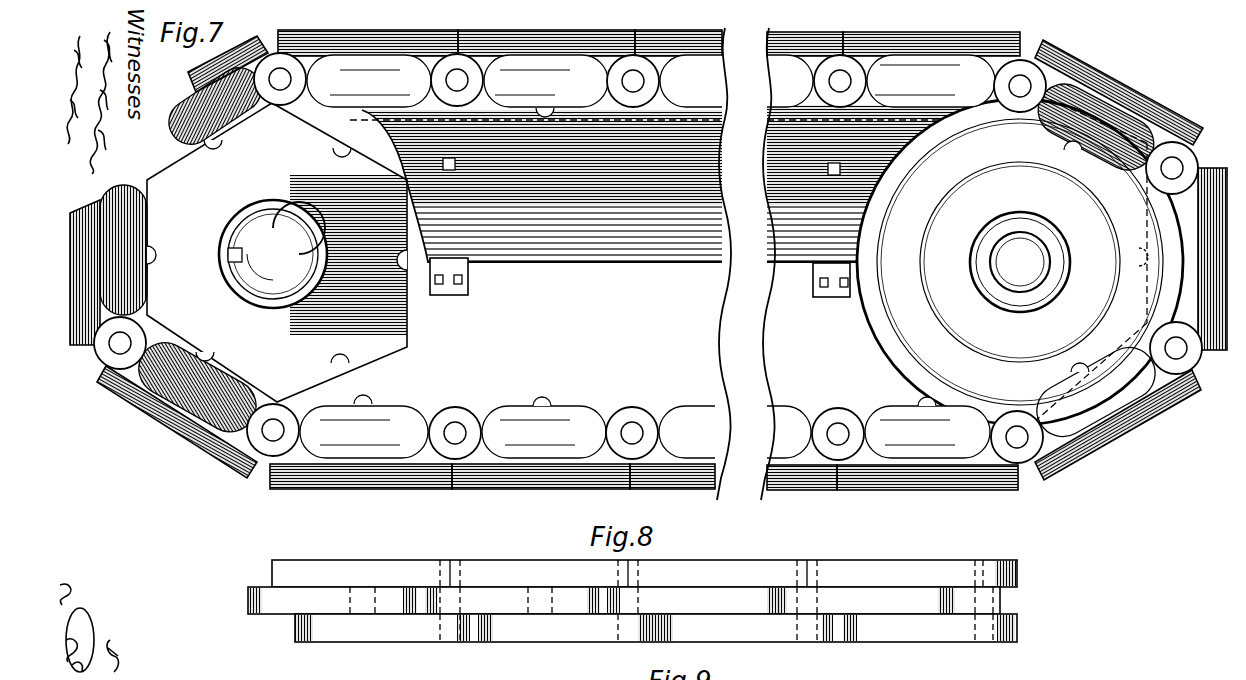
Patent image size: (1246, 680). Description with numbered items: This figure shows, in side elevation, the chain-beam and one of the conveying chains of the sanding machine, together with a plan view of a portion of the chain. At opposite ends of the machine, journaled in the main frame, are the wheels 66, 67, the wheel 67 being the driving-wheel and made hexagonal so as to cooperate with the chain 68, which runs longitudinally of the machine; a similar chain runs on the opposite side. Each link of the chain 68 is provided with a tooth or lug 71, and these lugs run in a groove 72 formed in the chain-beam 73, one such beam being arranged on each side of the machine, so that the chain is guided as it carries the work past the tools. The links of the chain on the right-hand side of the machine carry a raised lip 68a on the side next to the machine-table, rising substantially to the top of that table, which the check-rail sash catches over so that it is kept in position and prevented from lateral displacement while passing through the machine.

In FIG. 7, the wheel 66 is at (1020, 261).
In FIG. 7, the driving-wheel 67 is at (277, 252).
In FIG. 7, the chains 68 is at (240, 122).
In FIG. 8, the chains 68 is at (578, 628).
In FIG. 7, the raised lip 68a is at (1030, 46).
In FIG. 8, the raised lip 68a is at (878, 563).
In FIG. 7, the tooth or lug 71 is at (567, 376).
In FIG. 7, the groove 72 is at (495, 123).
In FIG. 7, the chain-beam 73 is at (688, 185).